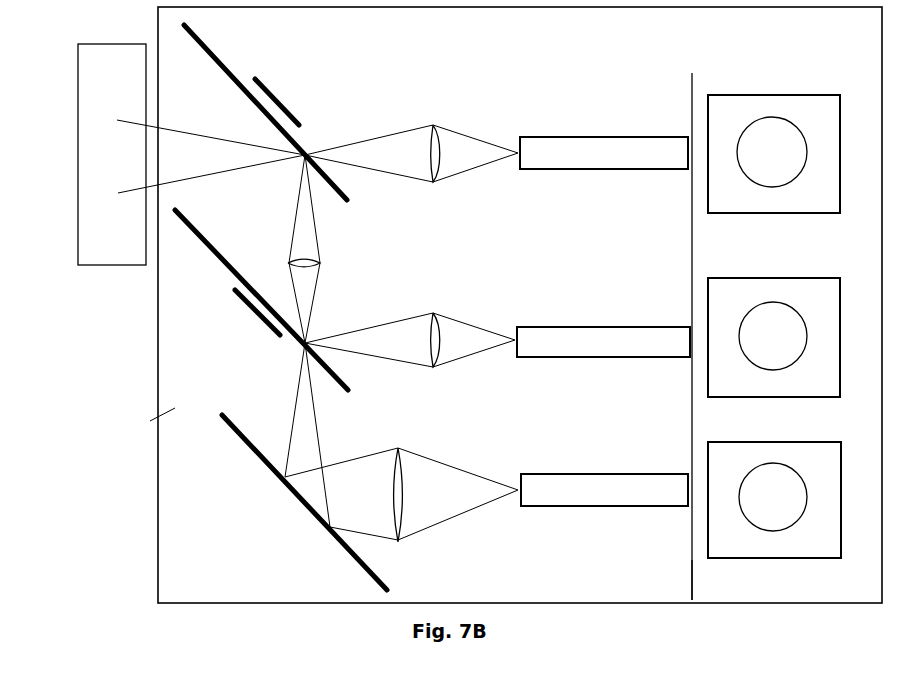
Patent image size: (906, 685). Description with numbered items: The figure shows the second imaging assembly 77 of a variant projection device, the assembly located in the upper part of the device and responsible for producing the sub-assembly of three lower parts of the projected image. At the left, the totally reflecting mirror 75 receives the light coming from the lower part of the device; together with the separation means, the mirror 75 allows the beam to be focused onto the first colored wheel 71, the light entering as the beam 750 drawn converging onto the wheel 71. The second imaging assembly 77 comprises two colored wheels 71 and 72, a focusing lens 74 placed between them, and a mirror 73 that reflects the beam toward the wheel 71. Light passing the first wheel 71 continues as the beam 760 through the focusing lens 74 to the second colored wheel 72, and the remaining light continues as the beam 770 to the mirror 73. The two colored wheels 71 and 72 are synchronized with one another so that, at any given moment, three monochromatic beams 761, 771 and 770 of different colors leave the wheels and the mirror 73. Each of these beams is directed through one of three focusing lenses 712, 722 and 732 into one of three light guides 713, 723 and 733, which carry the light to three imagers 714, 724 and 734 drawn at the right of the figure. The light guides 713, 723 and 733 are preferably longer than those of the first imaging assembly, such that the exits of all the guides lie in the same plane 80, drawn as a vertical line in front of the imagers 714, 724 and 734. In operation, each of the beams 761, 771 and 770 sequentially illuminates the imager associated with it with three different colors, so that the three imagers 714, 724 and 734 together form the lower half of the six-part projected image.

The colored wheel 71 is at (215, 72).
The colored wheel 72 is at (227, 267).
The mirror 73 is at (268, 465).
The focusing lens 74 is at (317, 263).
The totally reflecting mirror 75 is at (85, 82).
The second imaging assembly 77 is at (175, 408).
The plane 80 is at (690, 558).
The incoming light beam 750 is at (213, 173).
The transmitted light beam 760 is at (297, 240).
The monochromatic beam 761 is at (380, 162).
The monochromatic beam 770 is at (305, 403).
The monochromatic beam 771 is at (372, 348).
The focusing lens 712 is at (435, 175).
The light guide 713 is at (632, 167).
The imager 714 is at (730, 108).
The focusing lens 722 is at (433, 367).
The light guide 723 is at (622, 357).
The imager 724 is at (717, 283).
The focusing lens 732 is at (398, 530).
The light guide 733 is at (632, 492).
The imager 734 is at (737, 532).